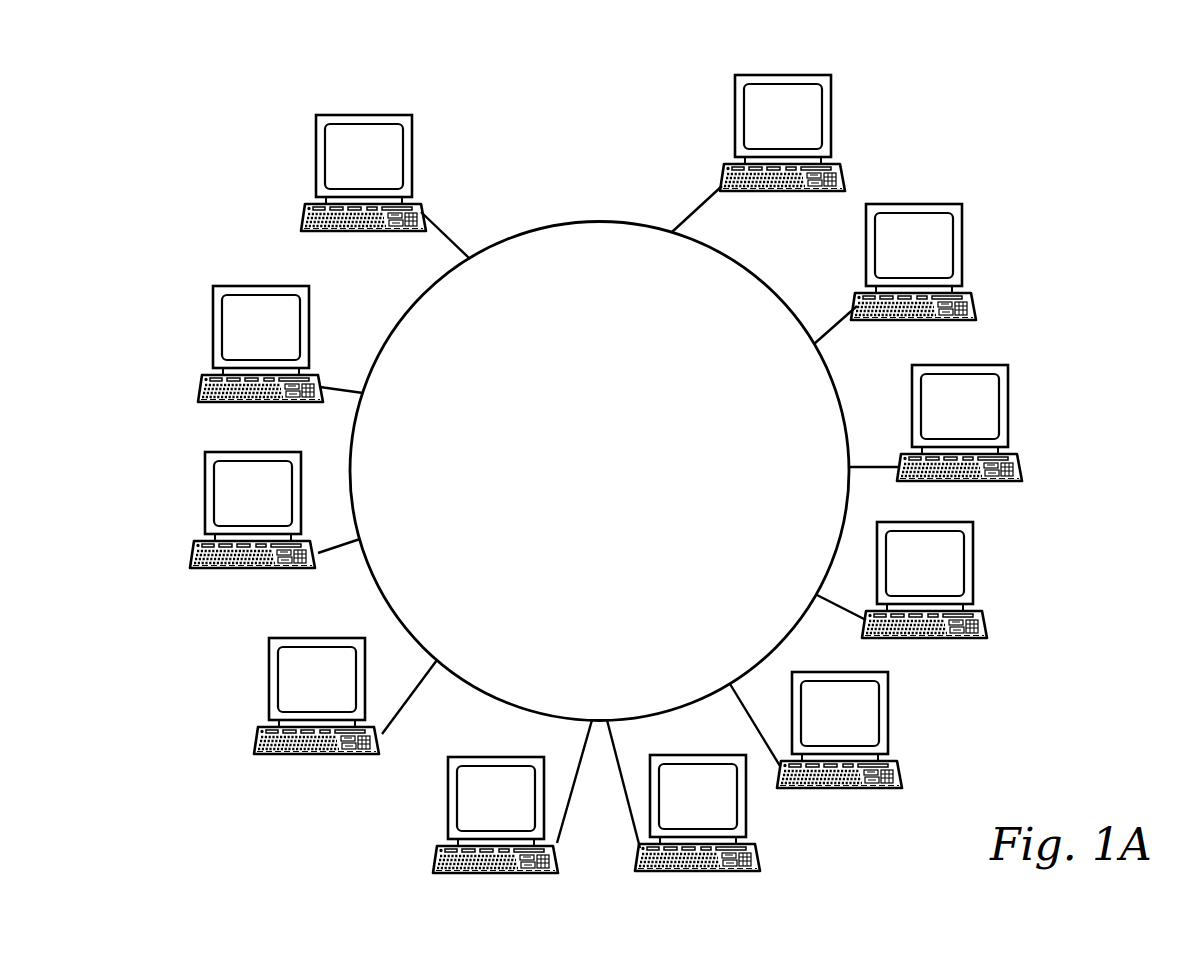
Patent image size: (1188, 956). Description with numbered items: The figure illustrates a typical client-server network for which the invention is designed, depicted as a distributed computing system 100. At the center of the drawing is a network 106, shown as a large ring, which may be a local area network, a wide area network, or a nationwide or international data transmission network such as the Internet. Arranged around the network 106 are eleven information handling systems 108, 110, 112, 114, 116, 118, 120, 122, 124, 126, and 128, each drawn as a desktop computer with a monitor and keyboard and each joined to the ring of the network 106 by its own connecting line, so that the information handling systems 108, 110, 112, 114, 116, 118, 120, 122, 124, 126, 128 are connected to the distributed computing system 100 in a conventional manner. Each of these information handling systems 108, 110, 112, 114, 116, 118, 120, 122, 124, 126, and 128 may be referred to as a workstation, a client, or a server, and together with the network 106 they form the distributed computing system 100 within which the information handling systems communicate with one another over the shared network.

The distributed computing system 100 is at (262, 114).
The network 106 is at (557, 222).
The information handling system 108 is at (304, 210).
The information handling system 110 is at (201, 381).
The information handling system 112 is at (193, 547).
The information handling system 114 is at (257, 733).
The information handling system 116 is at (436, 852).
The information handling system 118 is at (757, 852).
The information handling system 120 is at (899, 769).
The information handling system 122 is at (984, 619).
The information handling system 124 is at (1019, 462).
The information handling system 126 is at (973, 301).
The information handling system 128 is at (842, 172).